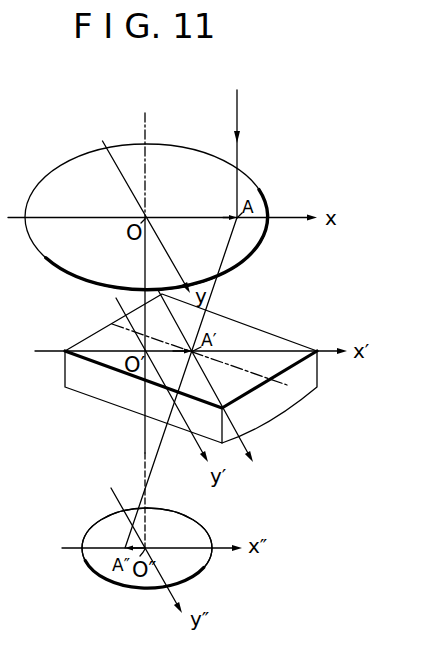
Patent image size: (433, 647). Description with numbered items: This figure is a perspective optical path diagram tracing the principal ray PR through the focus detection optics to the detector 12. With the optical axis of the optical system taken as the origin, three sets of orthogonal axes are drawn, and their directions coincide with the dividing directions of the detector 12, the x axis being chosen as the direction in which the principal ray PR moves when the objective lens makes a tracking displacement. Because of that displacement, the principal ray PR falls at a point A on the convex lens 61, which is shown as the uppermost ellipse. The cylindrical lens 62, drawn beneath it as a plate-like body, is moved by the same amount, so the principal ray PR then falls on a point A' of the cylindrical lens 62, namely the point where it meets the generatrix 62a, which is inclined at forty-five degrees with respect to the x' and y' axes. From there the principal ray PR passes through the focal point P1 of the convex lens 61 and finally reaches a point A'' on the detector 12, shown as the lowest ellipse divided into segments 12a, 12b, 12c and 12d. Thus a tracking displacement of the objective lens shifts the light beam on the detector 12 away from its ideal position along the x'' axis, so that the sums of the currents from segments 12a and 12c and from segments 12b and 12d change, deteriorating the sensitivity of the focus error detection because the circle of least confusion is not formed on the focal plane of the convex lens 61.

The convex lens 61 is at (251, 178).
The cylindrical lens 62 is at (268, 334).
The generatrix of the cylindrical lens 62a is at (112, 324).
The detector 12 is at (130, 589).
The detector segment 12a is at (205, 567).
The detector segment 12b is at (205, 519).
The detector segment 12c is at (101, 518).
The detector segment 12d is at (90, 566).
The principal ray PR is at (238, 105).
The focal point of the convex lens P1 is at (145, 488).